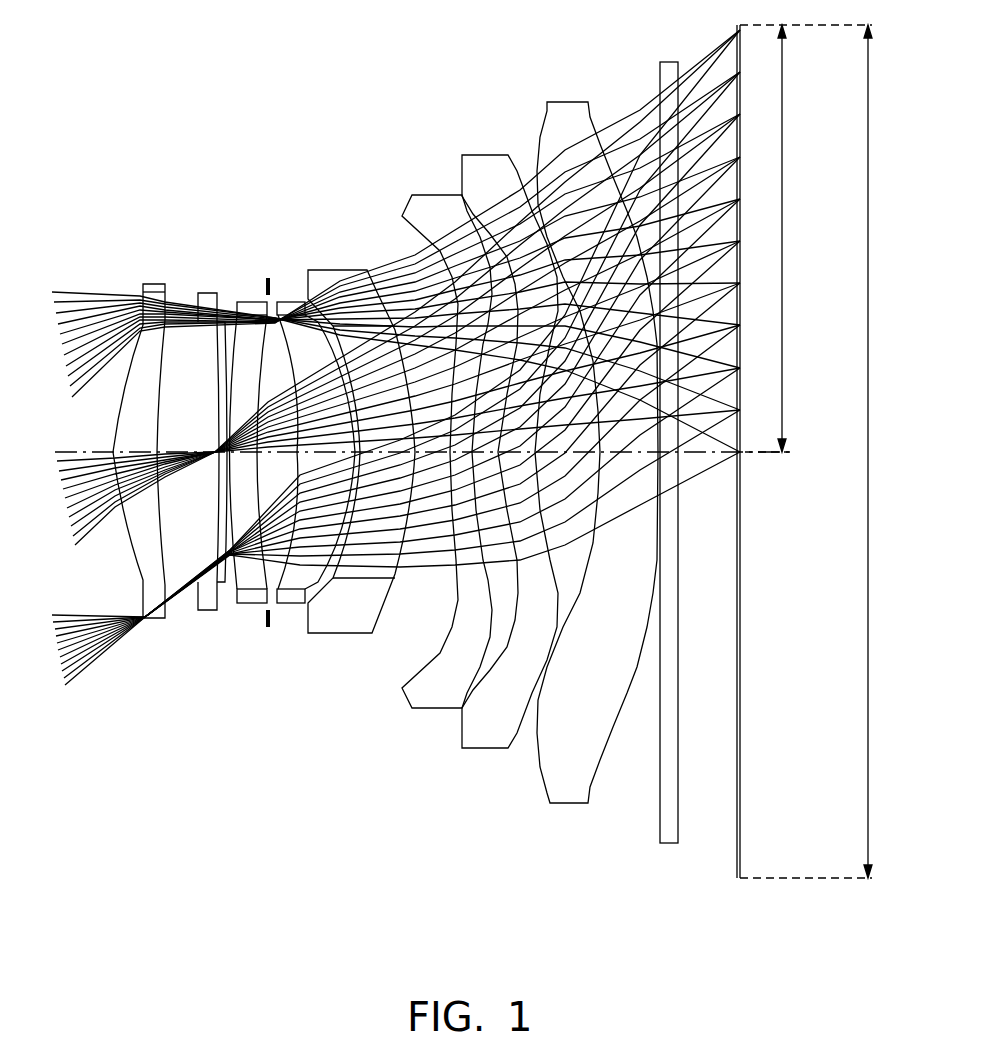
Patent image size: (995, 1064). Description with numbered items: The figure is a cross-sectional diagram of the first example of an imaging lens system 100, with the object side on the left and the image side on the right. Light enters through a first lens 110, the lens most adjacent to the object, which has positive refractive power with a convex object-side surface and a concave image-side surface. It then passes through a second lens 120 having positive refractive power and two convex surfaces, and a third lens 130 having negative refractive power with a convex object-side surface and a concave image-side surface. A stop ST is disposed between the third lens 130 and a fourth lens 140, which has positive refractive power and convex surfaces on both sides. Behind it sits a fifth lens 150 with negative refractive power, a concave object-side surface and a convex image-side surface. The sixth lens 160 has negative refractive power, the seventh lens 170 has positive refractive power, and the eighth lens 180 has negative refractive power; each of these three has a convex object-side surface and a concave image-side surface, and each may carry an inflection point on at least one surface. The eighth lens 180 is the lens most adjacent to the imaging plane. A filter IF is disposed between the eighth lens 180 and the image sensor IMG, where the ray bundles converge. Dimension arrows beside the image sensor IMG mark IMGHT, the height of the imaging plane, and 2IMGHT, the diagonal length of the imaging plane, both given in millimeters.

The imaging lens system 100 is at (346, 156).
The first lens 110 is at (160, 619).
The second lens 120 is at (213, 611).
The third lens 130 is at (257, 604).
The fourth lens 140 is at (287, 604).
The fifth lens 150 is at (340, 634).
The sixth lens 160 is at (437, 709).
The seventh lens 170 is at (485, 749).
The eighth lens 180 is at (568, 803).
The stop ST is at (270, 276).
The filter IF is at (668, 844).
The image sensor IMG is at (737, 850).
The height of the imaging plane IMGHT is at (806, 238).
The diagonal length of the imaging plane 2IMGHT is at (844, 451).